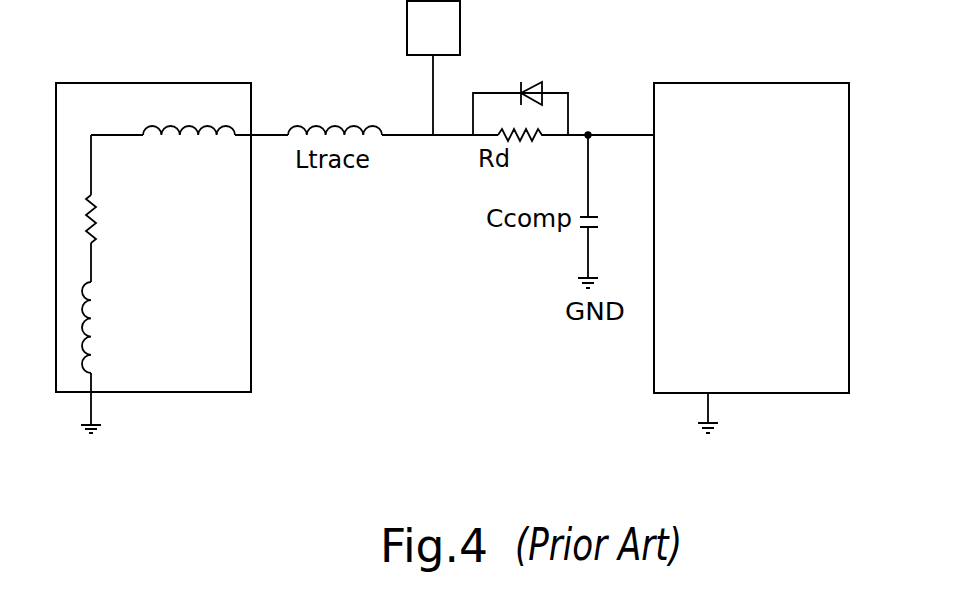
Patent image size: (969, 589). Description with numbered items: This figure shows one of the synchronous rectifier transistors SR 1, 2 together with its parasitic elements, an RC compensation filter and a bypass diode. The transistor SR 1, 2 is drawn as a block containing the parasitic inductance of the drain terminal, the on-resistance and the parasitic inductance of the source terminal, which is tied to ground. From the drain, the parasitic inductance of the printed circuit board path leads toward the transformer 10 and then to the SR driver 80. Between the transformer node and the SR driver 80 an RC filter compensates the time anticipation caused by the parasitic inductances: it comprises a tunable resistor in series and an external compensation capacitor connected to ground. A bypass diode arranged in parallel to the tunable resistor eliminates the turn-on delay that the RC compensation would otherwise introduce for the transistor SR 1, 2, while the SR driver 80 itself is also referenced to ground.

The transistor SR1 1 is at (163, 241).
The transistor SR2 2 is at (203, 83).
The transformer 10 is at (425, 47).
The SR driver 80 is at (733, 105).